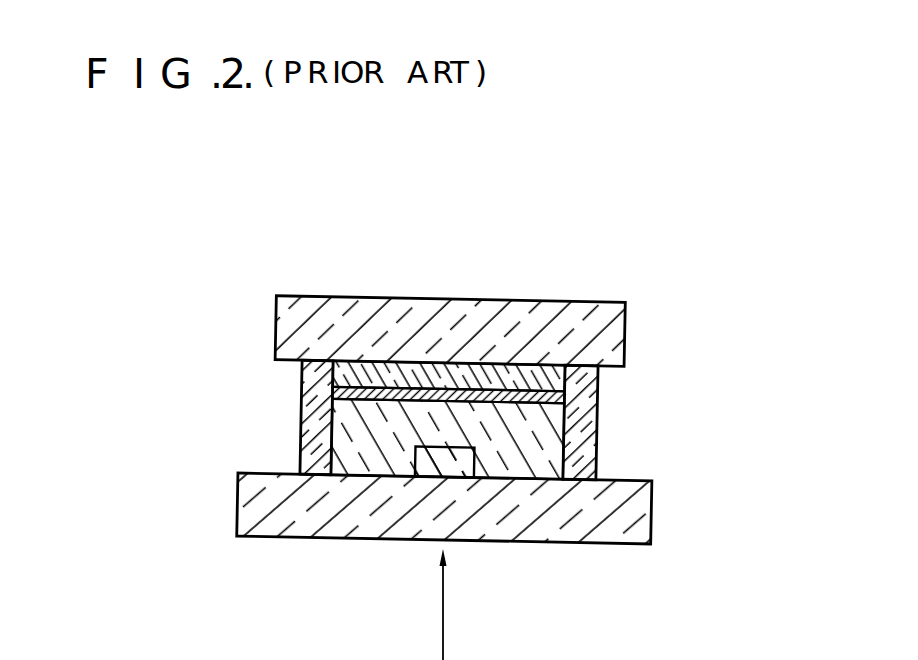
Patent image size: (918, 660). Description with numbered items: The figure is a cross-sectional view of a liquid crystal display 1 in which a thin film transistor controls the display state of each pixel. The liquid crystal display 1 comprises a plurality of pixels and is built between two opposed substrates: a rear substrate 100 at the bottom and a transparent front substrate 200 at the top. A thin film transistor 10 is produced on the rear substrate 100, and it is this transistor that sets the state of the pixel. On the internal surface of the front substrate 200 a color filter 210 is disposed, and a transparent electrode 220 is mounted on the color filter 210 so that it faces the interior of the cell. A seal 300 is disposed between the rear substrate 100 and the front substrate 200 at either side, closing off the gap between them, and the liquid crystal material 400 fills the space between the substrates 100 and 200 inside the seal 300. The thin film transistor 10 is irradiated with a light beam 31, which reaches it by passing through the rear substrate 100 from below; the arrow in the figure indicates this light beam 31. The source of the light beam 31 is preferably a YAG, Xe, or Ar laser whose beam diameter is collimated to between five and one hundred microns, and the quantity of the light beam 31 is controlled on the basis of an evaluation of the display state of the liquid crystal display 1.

The liquid crystal display 1 is at (315, 274).
The thin film transistor 10 is at (428, 466).
The light beam 31 is at (446, 636).
The rear substrate 100 is at (627, 519).
The transparent front substrate 200 is at (623, 308).
The color filter 210 is at (485, 372).
The transparent electrode 220 is at (597, 395).
The seal 300 is at (313, 432).
The liquid crystal material 400 is at (348, 450).